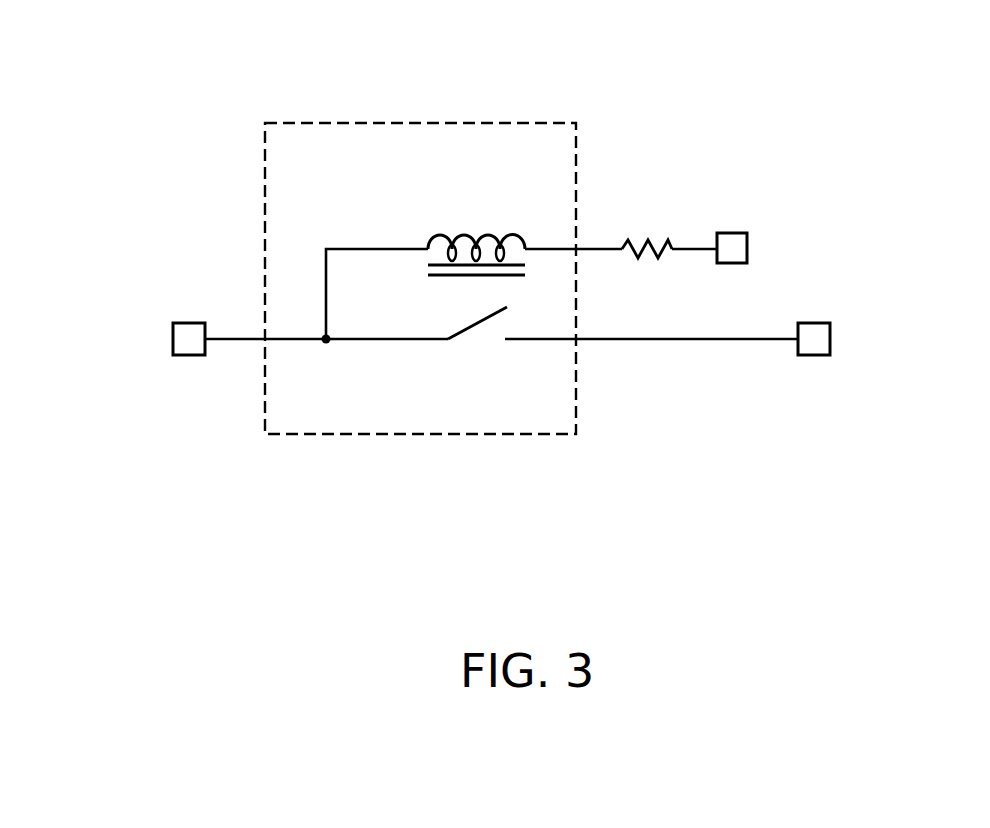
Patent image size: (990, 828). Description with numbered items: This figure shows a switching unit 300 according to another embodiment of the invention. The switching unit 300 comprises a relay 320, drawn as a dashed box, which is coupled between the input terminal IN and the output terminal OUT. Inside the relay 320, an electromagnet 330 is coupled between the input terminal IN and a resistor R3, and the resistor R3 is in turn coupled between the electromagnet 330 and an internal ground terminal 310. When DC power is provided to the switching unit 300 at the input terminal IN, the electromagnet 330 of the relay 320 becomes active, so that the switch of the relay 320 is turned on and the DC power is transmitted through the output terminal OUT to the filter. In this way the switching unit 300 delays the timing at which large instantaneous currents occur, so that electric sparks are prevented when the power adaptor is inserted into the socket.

The switching unit 300 is at (979, 510).
The internal ground terminal 310 is at (747, 248).
The relay 320 is at (419, 120).
The electromagnet 330 is at (476, 235).
The resistor R3 is at (656, 245).
The input terminal IN is at (172, 341).
The output terminal OUT is at (830, 339).